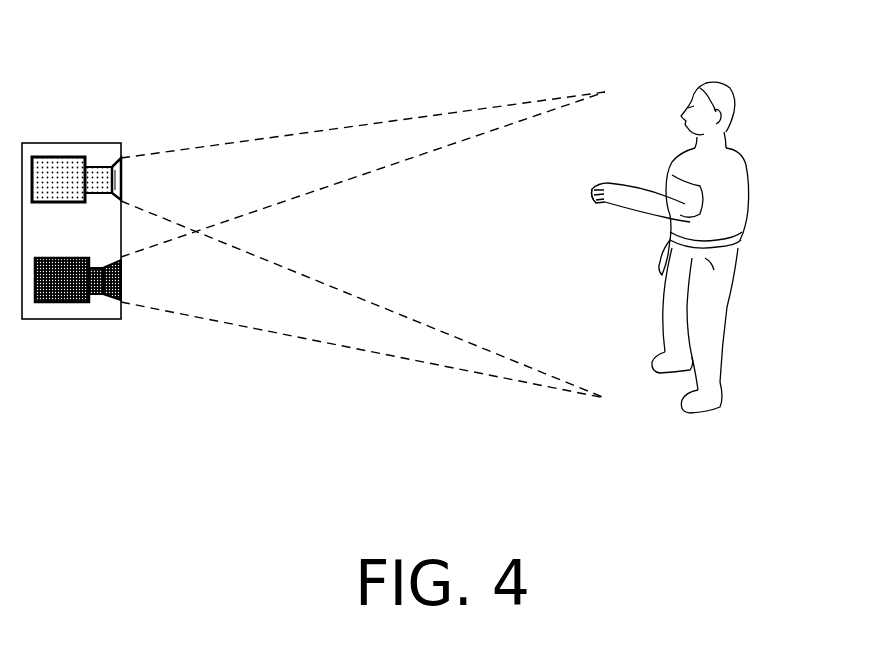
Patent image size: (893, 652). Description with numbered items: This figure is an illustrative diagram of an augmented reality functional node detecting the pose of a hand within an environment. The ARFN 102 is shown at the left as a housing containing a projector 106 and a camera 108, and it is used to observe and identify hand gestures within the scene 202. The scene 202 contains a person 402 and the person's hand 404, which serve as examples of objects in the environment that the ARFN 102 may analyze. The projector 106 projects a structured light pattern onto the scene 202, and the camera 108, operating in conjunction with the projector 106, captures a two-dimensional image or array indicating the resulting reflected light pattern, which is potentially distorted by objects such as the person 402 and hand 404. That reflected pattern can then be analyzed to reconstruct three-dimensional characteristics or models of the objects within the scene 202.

The ARFN 102 is at (48, 303).
The projector 106 is at (58, 180).
The camera 108 is at (80, 303).
The scene 202 is at (541, 58).
The person 402 is at (722, 157).
The hand 404 is at (597, 185).